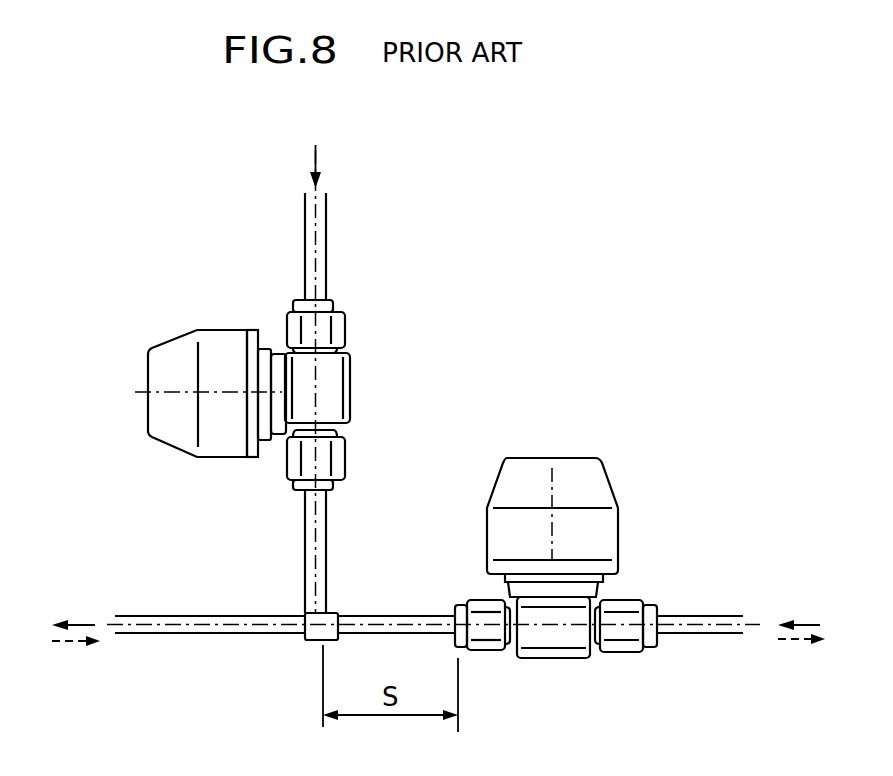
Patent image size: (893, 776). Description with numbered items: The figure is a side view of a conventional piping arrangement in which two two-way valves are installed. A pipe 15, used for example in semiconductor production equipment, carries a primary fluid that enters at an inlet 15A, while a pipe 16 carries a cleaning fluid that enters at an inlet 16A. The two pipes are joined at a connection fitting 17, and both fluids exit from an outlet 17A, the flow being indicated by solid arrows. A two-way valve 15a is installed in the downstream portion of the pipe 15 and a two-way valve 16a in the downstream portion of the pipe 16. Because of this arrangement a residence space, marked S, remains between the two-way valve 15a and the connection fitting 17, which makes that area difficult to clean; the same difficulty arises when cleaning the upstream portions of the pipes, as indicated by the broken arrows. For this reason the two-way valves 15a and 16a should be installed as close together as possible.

The pipe 15 is at (680, 637).
The inlet 15A is at (762, 622).
The two-way valve 15a is at (590, 457).
The pipe 16 is at (329, 243).
The inlet 16A is at (327, 190).
The two-way valve 16a is at (155, 347).
The connection fitting 17 is at (305, 645).
The outlet 17A is at (107, 643).